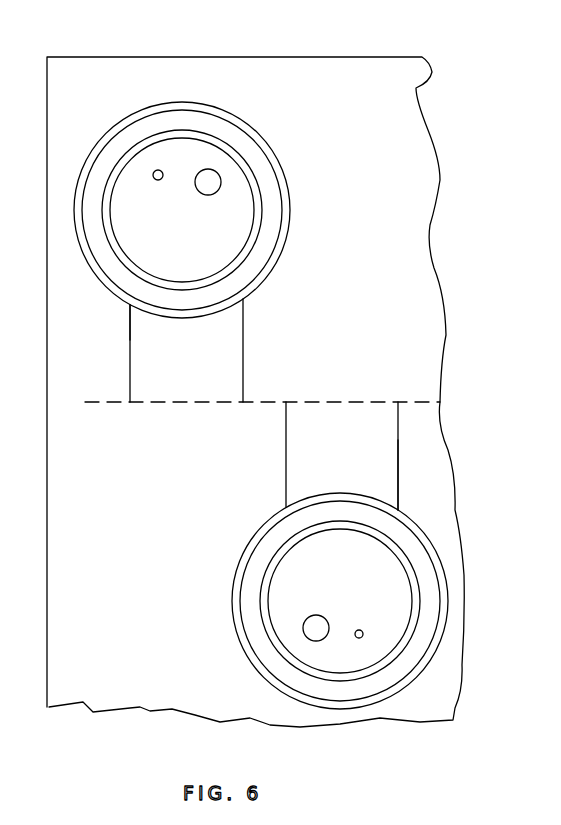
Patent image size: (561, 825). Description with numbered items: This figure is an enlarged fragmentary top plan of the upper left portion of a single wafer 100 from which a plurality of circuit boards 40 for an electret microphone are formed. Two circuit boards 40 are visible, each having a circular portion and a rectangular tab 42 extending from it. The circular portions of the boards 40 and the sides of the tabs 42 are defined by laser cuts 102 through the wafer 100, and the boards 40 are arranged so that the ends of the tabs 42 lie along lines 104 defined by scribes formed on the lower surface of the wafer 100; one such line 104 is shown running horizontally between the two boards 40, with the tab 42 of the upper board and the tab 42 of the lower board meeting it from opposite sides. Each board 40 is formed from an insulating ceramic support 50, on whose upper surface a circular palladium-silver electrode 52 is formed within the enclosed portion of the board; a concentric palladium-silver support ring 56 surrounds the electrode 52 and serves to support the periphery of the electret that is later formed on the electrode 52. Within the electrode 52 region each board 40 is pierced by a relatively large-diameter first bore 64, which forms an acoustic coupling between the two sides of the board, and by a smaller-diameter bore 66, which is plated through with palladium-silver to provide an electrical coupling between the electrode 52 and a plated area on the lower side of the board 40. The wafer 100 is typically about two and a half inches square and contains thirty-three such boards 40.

The wafer 100 is at (358, 76).
The lines 104 is at (313, 400).
The circuit board 40 is at (208, 105).
The insulating ceramic support 50 is at (118, 126).
The support ring 56 is at (250, 150).
The electrode 52 is at (201, 270).
The first bore 64 is at (206, 193).
The smaller-diameter bore 66 is at (158, 181).
The tab 42 is at (142, 382).
The laser cuts 102 is at (130, 330).